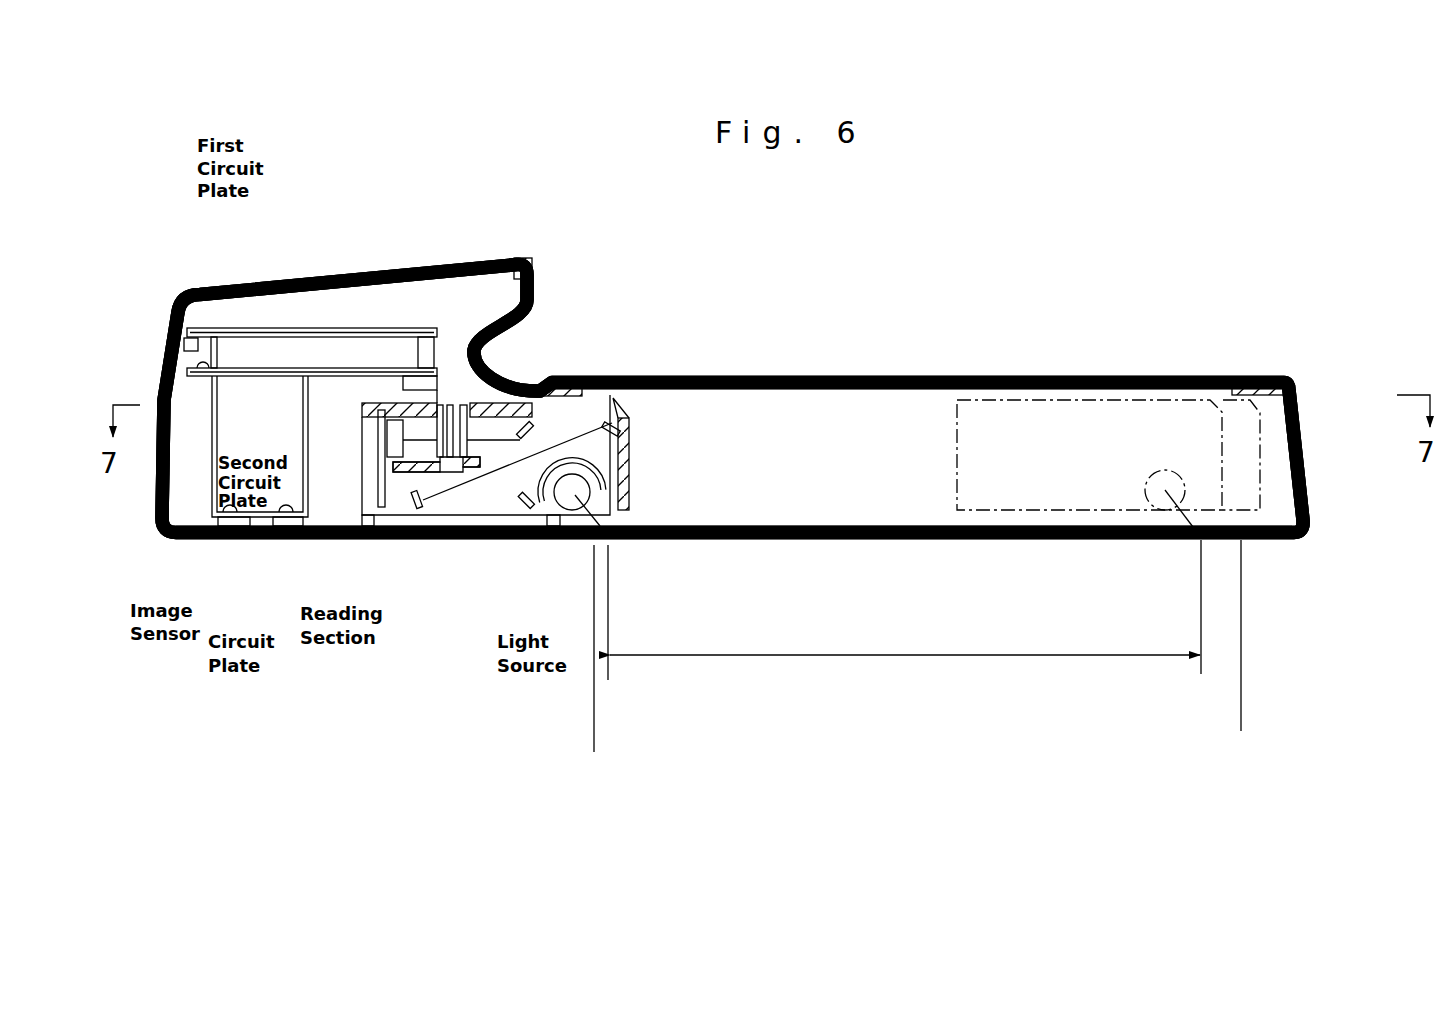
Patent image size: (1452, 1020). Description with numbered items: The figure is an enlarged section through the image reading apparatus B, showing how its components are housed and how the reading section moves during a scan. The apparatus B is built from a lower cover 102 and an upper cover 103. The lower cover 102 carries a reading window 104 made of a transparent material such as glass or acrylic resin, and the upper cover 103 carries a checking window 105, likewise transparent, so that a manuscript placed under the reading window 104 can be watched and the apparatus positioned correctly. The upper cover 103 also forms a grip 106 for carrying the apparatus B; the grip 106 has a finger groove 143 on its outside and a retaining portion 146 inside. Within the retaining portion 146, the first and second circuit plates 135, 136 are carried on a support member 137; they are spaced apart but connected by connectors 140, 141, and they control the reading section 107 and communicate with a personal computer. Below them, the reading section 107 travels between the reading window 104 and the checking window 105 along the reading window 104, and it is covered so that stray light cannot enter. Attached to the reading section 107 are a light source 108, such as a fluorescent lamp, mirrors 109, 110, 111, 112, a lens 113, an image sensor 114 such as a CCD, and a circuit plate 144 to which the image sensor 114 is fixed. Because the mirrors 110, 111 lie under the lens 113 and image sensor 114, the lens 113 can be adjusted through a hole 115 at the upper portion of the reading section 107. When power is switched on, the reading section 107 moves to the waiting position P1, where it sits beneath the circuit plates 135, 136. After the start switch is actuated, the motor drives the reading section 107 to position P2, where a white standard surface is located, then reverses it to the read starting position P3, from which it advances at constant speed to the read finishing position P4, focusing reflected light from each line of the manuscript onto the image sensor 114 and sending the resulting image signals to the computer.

The lower cover 102 is at (1306, 527).
The upper cover 103 is at (1288, 377).
The reading window 104 is at (830, 539).
The checking window 105 is at (807, 377).
The grip 106 is at (522, 272).
The reading section 107 is at (366, 516).
The light source 108 is at (572, 500).
The mirror 109 is at (625, 408).
The mirror 110 is at (415, 506).
The mirror 111 is at (525, 508).
The mirror 112 is at (610, 420).
The lens 113 is at (613, 398).
The image sensor 114 is at (390, 443).
The hole 115 is at (518, 262).
The first circuit plate 135 is at (256, 376).
The second circuit plate 136 is at (228, 328).
The support member 137 is at (212, 468).
The connector 140 is at (200, 348).
The connector 141 is at (416, 347).
The finger groove 143 is at (495, 345).
The circuit plate 144 is at (378, 507).
The retaining portion 146 is at (322, 306).
The image reading apparatus B is at (942, 335).
The waiting position P1 is at (598, 667).
The position at which white standard surface is placed P2 is at (1246, 657).
The read starting position P3 is at (1198, 629).
The read finishing position P4 is at (623, 633).